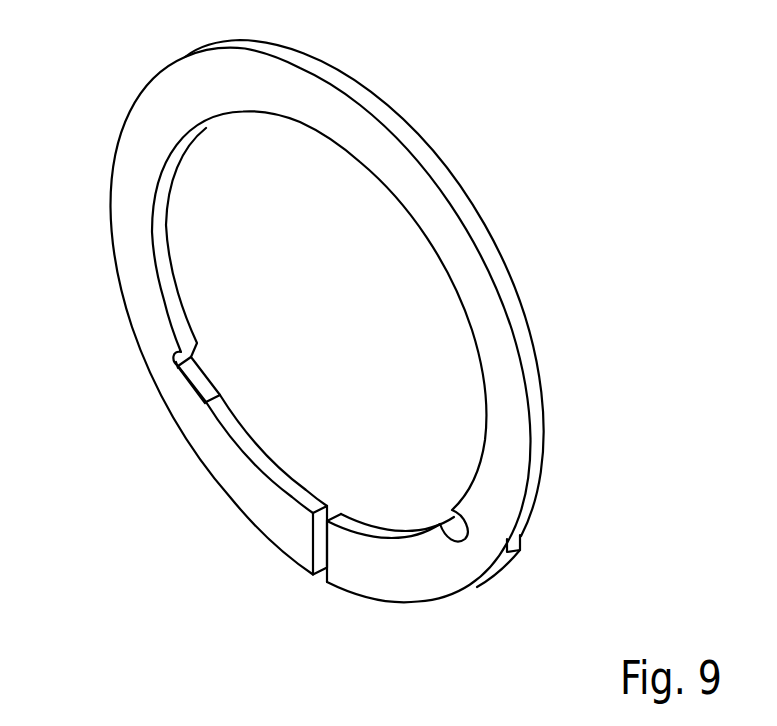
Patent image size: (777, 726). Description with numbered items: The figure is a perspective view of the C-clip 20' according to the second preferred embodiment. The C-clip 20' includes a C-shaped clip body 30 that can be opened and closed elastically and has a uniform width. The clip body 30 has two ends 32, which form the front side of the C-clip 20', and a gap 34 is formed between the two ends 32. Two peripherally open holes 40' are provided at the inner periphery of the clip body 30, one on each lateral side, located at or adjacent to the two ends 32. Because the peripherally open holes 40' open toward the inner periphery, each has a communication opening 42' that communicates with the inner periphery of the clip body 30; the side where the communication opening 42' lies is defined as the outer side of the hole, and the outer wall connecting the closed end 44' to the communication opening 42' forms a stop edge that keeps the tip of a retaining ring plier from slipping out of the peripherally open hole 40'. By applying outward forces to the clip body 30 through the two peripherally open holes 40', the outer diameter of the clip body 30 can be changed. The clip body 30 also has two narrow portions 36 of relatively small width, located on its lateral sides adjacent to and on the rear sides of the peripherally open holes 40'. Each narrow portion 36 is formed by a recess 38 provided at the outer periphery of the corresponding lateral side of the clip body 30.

The C-clip 20' is at (340, 352).
The clip body 30 is at (503, 260).
The ends 32 is at (311, 537).
The gap 34 is at (323, 572).
The narrow portions 36 is at (490, 510).
The recess 38 is at (517, 540).
The peripherally open holes 40' is at (314, 414).
The communication opening 42' is at (257, 401).
The closed end 44' is at (97, 351).